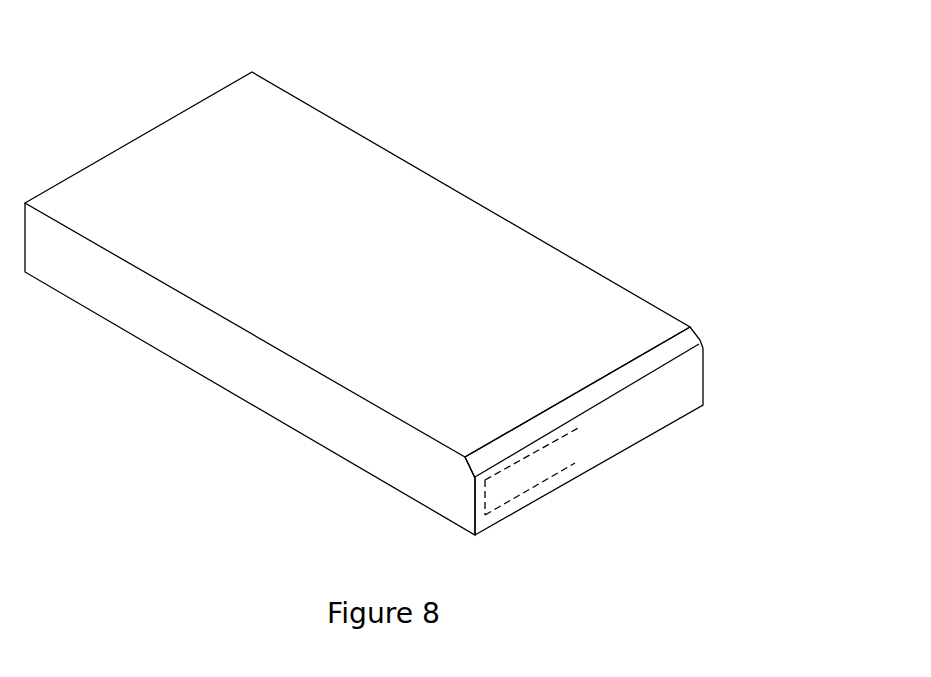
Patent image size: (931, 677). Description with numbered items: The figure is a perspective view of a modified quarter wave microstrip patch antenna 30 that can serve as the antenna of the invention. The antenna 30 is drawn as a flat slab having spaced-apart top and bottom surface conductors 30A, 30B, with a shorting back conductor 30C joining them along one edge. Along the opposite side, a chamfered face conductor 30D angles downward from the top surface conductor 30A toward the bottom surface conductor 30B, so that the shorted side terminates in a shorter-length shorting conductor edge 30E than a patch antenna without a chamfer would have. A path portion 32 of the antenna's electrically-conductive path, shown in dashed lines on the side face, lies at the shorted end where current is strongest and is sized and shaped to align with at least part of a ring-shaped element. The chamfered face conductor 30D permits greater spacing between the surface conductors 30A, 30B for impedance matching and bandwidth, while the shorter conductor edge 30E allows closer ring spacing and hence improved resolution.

The modified quarter wave microstrip patch antenna 30 is at (424, 297).
The top surface conductor 30A is at (518, 258).
The bottom surface conductor 30B is at (638, 443).
The shorting back conductor 30C is at (207, 360).
The chamfered face conductor 30D is at (700, 340).
The shorting conductor edge 30E is at (472, 503).
The path portion of electrically-conductive path 32 is at (523, 497).